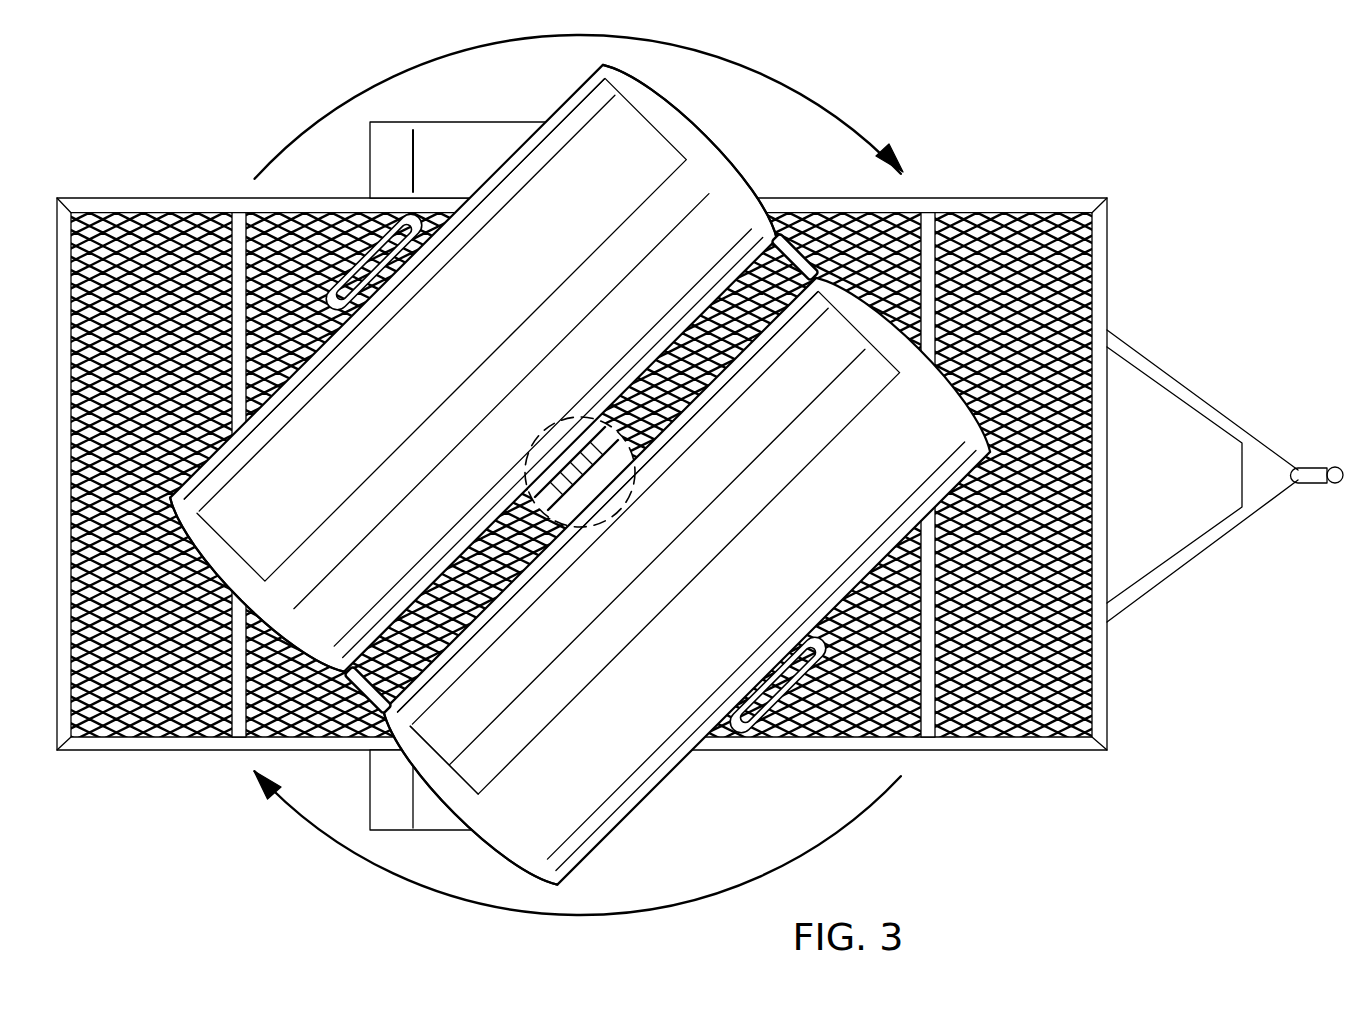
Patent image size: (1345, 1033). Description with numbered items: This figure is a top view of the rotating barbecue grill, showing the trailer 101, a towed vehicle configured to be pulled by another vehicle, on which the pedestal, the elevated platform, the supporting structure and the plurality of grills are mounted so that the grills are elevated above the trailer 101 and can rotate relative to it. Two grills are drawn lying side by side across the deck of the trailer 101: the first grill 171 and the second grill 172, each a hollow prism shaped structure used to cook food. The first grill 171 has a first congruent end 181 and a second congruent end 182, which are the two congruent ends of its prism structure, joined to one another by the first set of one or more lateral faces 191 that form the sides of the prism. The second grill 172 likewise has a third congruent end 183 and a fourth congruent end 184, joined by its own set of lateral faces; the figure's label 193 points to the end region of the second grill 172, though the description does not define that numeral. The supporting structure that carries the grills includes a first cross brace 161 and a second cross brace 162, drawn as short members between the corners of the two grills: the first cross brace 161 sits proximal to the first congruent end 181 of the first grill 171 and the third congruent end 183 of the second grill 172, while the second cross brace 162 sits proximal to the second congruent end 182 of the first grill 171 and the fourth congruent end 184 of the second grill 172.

The trailer 101 is at (1107, 243).
The first grill 171 is at (703, 140).
The second grill 172 is at (467, 868).
The first congruent end 181 is at (290, 640).
The second congruent end 182 is at (738, 168).
The third congruent end 183 is at (425, 775).
The fourth congruent end 184 is at (900, 348).
The first set of one or more lateral faces 191 is at (795, 265).
The second container end panel 193 is at (465, 777).
The first cross brace 161 is at (372, 712).
The second cross brace 162 is at (801, 258).